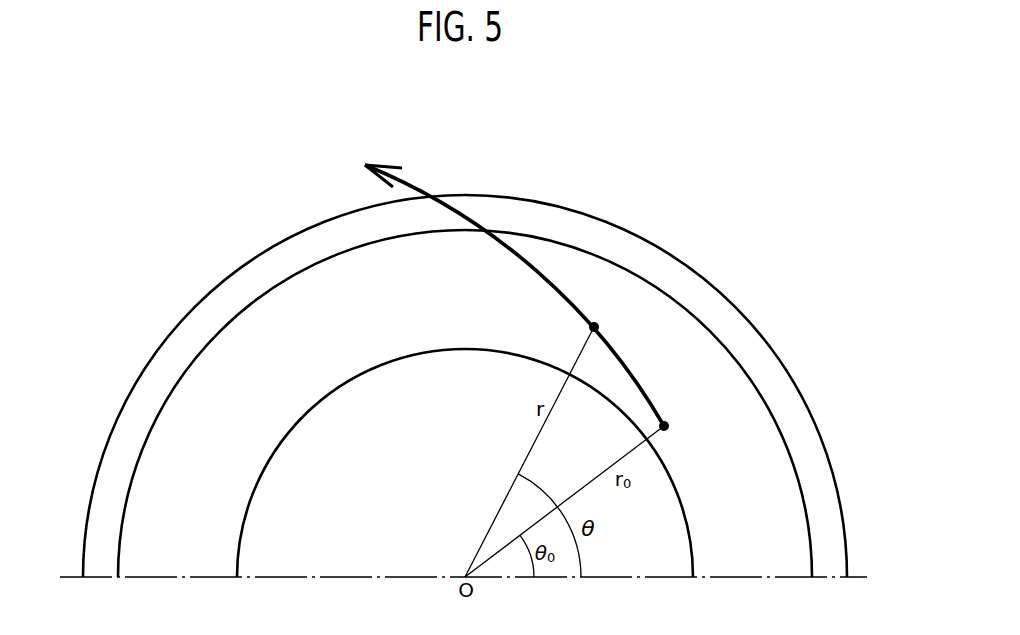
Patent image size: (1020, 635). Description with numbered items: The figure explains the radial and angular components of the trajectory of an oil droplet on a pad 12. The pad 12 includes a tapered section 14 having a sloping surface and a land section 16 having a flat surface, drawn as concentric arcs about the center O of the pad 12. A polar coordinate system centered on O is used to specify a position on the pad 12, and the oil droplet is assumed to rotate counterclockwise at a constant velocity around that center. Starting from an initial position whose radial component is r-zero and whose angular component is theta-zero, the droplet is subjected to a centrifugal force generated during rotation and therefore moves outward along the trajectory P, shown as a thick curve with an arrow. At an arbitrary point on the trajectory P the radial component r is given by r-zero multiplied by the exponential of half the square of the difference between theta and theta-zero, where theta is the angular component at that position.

The pad 12 is at (322, 213).
The tapered section 14 is at (298, 300).
The land section 16 is at (297, 243).
The trajectory P is at (528, 258).